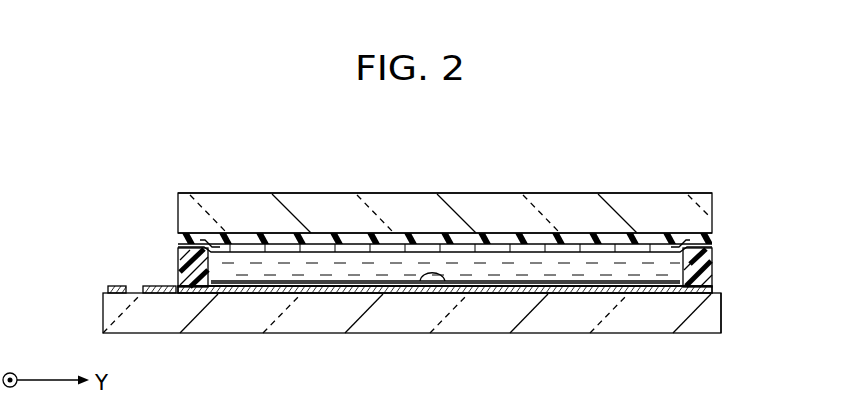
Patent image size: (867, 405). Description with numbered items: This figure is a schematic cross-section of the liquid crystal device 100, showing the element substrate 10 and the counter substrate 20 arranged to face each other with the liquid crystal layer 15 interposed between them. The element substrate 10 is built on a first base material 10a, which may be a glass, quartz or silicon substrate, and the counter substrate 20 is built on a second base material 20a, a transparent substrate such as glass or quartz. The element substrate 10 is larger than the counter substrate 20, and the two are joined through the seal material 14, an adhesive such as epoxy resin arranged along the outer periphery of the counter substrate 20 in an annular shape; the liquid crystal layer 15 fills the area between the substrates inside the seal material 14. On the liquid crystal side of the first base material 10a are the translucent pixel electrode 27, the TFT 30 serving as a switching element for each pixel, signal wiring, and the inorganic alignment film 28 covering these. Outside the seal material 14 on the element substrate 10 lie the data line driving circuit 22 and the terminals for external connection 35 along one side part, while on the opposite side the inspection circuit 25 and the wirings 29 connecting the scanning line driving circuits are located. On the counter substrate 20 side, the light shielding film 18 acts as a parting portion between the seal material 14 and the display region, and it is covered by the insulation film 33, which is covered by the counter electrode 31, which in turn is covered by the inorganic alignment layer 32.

The liquid crystal device 100 is at (609, 106).
The element substrate 10 is at (728, 293).
The first base material 10a is at (703, 326).
The counter substrate 20 is at (719, 193).
The second base material 20a is at (698, 192).
The seal material 14 is at (704, 257).
The liquid crystal layer 15 is at (562, 286).
The light shielding film 18 is at (223, 232).
The data line driving circuit 22 is at (160, 286).
The inspection circuit 25 is at (642, 294).
The pixel electrode 27 is at (300, 294).
The inorganic alignment film 28 is at (430, 282).
The wirings 29 is at (668, 294).
The TFT 30 is at (445, 289).
The counter electrode 31 is at (602, 249).
The inorganic alignment layer 32 is at (511, 250).
The insulation film 33 is at (356, 240).
The terminals for external connection 35 is at (116, 286).